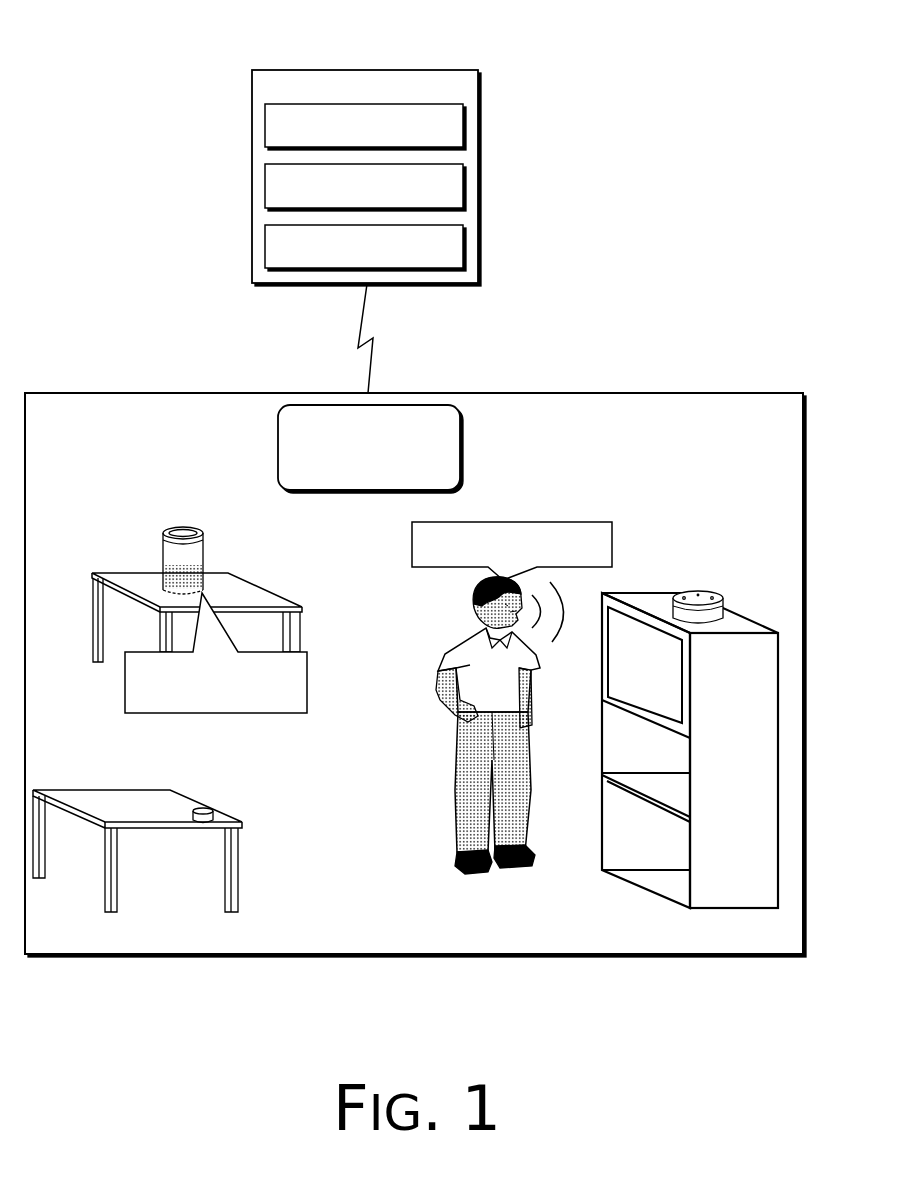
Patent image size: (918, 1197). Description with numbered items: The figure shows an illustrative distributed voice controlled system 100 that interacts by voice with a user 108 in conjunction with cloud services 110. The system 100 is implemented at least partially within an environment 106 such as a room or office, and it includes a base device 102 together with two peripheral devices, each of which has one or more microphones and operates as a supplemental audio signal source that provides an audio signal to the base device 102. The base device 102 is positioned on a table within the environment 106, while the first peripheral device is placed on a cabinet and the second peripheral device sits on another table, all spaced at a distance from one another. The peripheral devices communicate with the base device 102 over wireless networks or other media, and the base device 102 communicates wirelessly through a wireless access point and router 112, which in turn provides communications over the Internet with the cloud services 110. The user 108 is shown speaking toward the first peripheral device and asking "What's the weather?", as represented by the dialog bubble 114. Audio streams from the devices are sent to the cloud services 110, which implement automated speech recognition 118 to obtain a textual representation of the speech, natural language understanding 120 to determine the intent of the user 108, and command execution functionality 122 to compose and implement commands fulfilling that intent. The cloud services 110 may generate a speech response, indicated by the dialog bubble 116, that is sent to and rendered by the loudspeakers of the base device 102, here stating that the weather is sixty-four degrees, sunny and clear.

The distributed voice controlled system 100 is at (148, 21).
The base device 102 is at (163, 533).
The environment 106 is at (743, 402).
The user 108 is at (460, 636).
The cloud services 110 is at (460, 73).
The wireless access point and router 112 is at (285, 447).
The dialog bubble 114 is at (594, 528).
The dialog bubble 116 is at (297, 665).
The automated speech recognition (ASR) 118 is at (453, 125).
The natural language understanding (NLU) 120 is at (453, 175).
The command execution functionality 122 is at (453, 238).